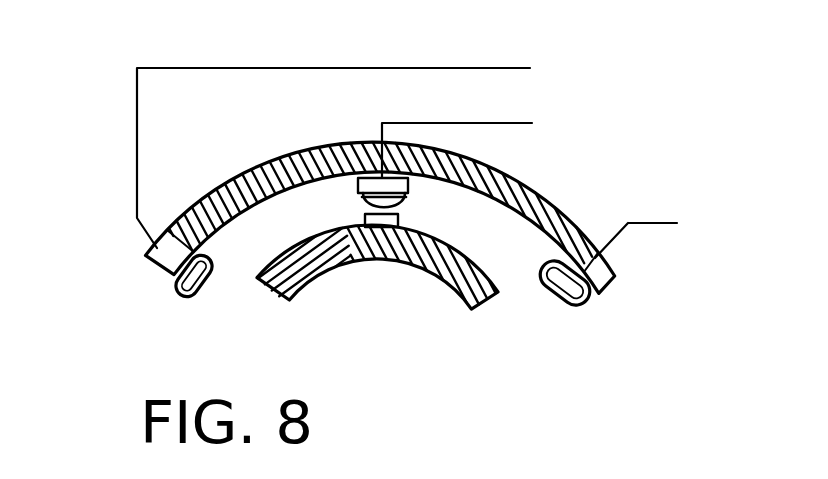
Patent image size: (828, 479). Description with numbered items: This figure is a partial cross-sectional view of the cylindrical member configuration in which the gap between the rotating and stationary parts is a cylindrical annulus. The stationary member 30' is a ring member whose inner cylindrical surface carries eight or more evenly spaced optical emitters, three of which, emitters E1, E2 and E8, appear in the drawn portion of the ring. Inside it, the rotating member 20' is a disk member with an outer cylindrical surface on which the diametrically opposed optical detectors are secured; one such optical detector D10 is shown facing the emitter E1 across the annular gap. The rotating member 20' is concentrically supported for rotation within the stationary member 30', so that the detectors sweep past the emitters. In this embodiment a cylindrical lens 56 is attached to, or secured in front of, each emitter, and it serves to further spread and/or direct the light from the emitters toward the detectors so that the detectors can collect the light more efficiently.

The stationary member 30' is at (342, 217).
The rotating member 20' is at (397, 267).
The optical emitter E1 is at (368, 166).
The cylindrical lens 56 is at (362, 208).
The optical detector D10 is at (384, 222).
The optical emitter E8 is at (172, 292).
The optical emitter E2 is at (582, 300).